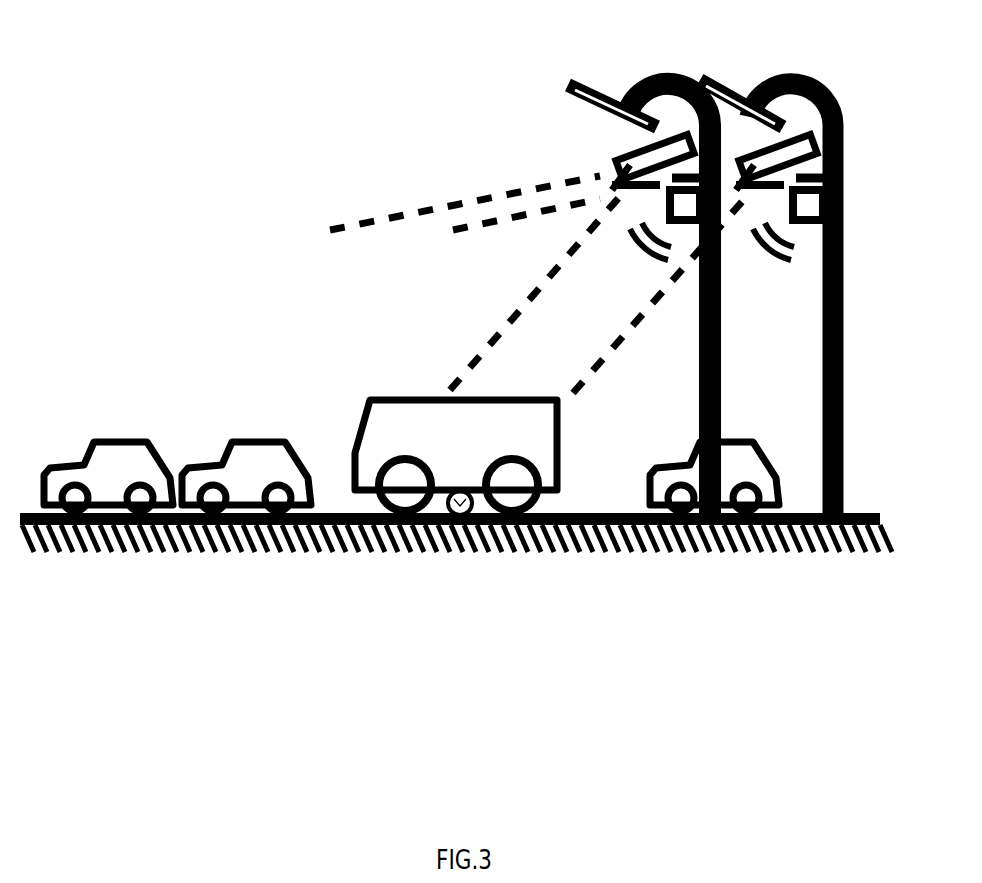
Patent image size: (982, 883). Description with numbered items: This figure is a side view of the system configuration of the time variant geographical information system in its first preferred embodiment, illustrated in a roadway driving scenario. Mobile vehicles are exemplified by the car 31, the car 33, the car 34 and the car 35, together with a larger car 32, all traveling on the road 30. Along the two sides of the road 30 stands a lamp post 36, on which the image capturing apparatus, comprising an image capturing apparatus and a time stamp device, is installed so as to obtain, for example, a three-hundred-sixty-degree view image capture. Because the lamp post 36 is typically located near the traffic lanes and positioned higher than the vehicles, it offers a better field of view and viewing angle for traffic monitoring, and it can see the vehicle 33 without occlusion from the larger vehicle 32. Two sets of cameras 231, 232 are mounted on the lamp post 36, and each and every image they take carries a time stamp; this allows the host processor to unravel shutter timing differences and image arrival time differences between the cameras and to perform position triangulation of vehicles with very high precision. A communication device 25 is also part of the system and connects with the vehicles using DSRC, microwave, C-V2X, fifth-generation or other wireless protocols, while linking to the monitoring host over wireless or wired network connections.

The communication device 25 is at (668, 205).
The road 30 is at (360, 553).
The car 31 is at (770, 450).
The larger car 32 is at (540, 452).
The car 33 is at (265, 438).
The car 34 is at (125, 438).
The car 35 is at (470, 548).
The lamp post 36 is at (593, 84).
The camera 231 is at (818, 143).
The camera 232 is at (630, 165).